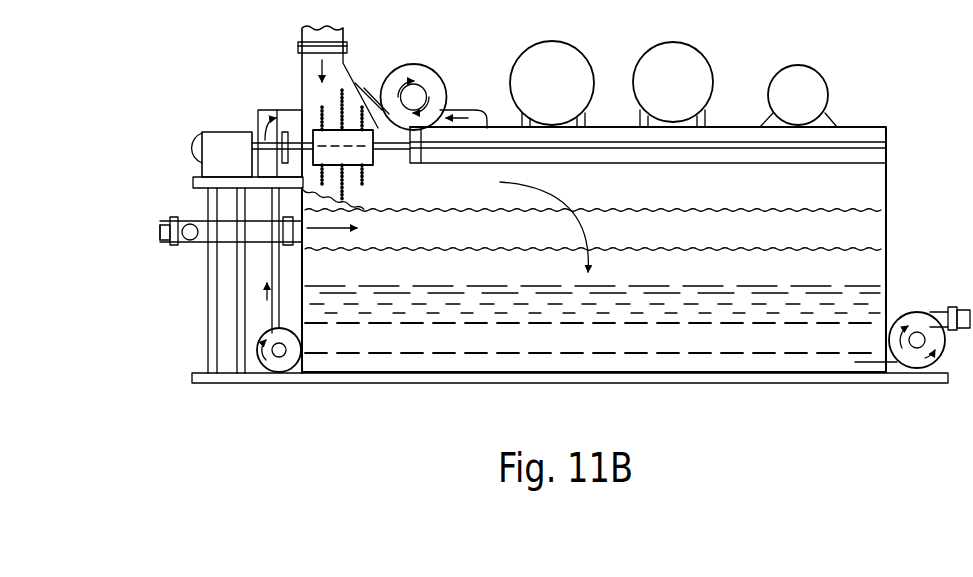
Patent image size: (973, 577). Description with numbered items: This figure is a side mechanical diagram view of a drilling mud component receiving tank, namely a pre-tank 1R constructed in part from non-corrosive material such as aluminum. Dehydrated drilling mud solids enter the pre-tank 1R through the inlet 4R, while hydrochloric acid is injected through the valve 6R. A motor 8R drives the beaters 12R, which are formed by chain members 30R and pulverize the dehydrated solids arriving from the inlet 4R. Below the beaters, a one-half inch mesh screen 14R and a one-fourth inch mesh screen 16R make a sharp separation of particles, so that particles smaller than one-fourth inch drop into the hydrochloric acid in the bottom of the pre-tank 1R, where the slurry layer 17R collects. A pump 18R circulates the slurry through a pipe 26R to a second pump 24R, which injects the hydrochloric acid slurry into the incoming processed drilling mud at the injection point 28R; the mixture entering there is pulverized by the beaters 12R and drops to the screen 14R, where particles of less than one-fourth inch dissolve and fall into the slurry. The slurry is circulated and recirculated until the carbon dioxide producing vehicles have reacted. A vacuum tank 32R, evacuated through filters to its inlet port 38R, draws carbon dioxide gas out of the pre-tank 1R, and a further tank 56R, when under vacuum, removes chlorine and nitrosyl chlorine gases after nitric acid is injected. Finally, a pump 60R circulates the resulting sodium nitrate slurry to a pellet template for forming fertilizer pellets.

The pre-tank 1R is at (892, 180).
The inlet 4R is at (343, 33).
The valve 6R is at (187, 220).
The motor 8R is at (210, 132).
The beaters 12R is at (377, 167).
The one-half inch mesh screen 14R is at (650, 205).
The one-fourth inch mesh screen 16R is at (673, 246).
The sediment layer 17R is at (482, 285).
The pump 18R is at (298, 373).
The pump 24R is at (430, 64).
The pipe 26R is at (275, 110).
The injection point 28R is at (358, 84).
The chain members 30R is at (347, 193).
The vacuum tank 32R is at (691, 43).
The inlet port 38R is at (160, 232).
The tank 56R is at (577, 43).
The pump 60R is at (918, 312).